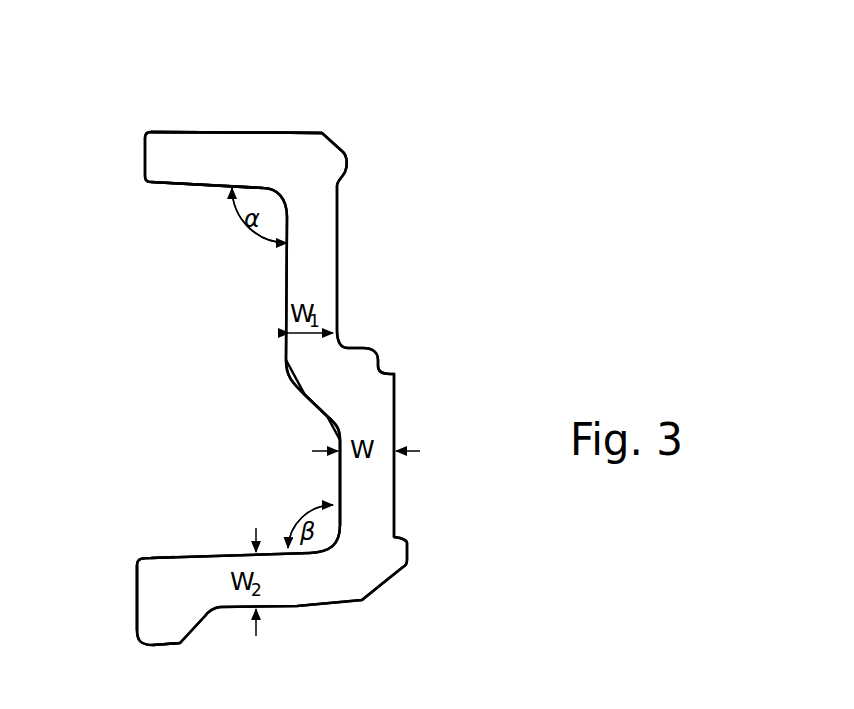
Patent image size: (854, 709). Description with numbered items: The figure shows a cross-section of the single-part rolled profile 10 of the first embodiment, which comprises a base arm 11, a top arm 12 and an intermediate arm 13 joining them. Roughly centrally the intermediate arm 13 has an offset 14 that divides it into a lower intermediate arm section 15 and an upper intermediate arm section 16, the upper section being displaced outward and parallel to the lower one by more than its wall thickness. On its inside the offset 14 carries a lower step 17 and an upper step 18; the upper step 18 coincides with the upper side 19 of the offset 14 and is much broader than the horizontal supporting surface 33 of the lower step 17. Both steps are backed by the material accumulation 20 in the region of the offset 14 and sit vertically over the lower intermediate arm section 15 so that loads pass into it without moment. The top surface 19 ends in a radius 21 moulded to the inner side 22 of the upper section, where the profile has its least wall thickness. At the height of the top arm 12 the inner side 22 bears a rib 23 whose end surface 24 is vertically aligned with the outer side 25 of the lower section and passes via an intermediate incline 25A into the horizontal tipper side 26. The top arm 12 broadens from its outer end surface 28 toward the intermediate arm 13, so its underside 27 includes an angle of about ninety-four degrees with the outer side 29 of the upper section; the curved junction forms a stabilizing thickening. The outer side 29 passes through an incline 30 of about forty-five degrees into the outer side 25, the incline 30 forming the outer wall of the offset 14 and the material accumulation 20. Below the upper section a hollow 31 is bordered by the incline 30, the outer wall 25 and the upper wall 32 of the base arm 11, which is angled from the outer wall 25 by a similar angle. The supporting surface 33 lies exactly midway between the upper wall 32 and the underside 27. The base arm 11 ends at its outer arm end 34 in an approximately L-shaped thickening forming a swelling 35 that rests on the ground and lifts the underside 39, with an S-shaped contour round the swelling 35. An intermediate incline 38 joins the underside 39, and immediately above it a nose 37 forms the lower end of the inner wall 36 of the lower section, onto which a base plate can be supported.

The rolled profile 10 is at (478, 249).
The base arm 11 is at (206, 568).
The top arm 12 is at (207, 165).
The intermediate arm 13 is at (263, 340).
The offset 14 is at (278, 409).
The lower intermediate arm section 15 is at (378, 481).
The upper intermediate arm section 16 is at (322, 262).
The lower step 17 is at (392, 357).
The upper step 18 is at (360, 329).
The upper side of the offset 19 is at (362, 347).
The material accumulation 20 is at (318, 378).
The radius 21 is at (330, 337).
The inner side of the upper intermediate arm section 22 is at (338, 225).
The rib 23 is at (338, 168).
The end surface of the rib 24 is at (350, 158).
The outer side of the lower intermediate arm section 25 is at (340, 493).
The intermediate incline 25A is at (337, 142).
The tipper side 26 is at (238, 132).
The underside of the top arm 27 is at (175, 185).
The outer end surface 28 is at (145, 158).
The outer side of the upper intermediate arm section 29 is at (287, 264).
The incline 30 is at (312, 405).
The hollow 31 is at (284, 488).
The upper wall of the base arm 32 is at (173, 558).
The horizontal supporting surface 33 is at (393, 368).
The outer arm end 34 is at (137, 595).
The swelling 35 is at (163, 627).
The inner wall of the lower intermediate arm section 36 is at (395, 418).
The nose 37 is at (399, 553).
The intermediate incline 38 is at (385, 585).
The underside of the base arm 39 is at (297, 607).